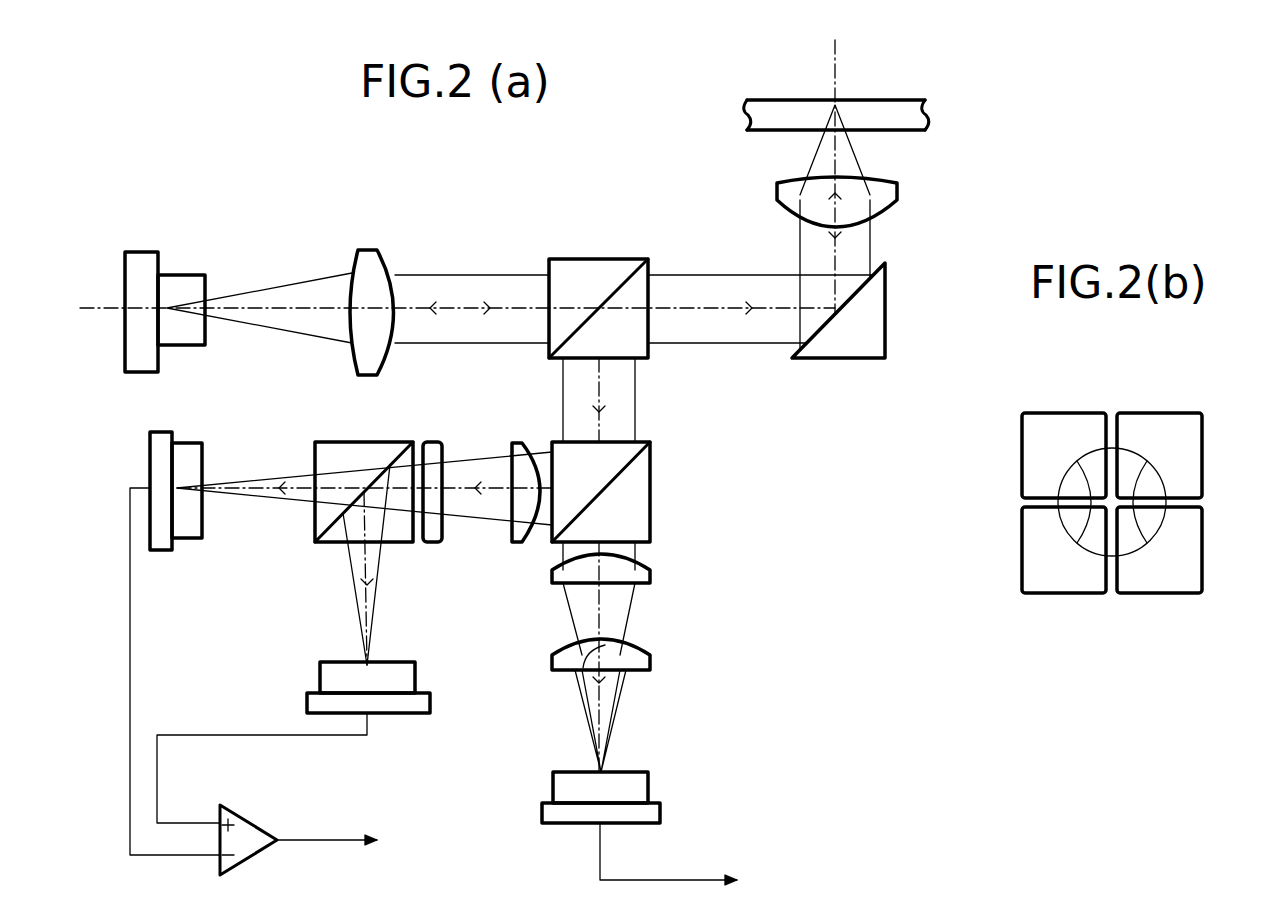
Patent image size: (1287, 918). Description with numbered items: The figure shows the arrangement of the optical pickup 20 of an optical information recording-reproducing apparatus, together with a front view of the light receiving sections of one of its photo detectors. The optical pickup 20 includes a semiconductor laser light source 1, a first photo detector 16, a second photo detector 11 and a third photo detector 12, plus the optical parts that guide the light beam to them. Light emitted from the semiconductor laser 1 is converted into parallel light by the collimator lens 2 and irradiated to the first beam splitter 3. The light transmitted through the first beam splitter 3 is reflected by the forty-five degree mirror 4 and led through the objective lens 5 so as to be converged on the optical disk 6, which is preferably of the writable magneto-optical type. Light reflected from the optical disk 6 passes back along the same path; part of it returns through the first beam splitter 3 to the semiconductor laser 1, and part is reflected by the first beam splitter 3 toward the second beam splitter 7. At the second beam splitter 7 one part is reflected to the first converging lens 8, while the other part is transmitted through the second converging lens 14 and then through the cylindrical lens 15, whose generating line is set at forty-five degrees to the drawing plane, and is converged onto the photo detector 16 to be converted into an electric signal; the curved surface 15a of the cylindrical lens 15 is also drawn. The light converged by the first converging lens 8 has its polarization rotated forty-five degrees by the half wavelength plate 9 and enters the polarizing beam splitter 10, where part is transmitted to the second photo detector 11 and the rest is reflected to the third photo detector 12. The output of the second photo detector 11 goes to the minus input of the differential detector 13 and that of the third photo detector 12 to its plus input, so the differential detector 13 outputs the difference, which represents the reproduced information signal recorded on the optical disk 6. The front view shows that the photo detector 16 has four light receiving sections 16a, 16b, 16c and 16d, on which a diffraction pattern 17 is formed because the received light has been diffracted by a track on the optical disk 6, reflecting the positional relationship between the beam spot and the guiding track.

In FIG. 2A, the semiconductor laser light source 1 is at (183, 292).
In FIG. 2A, the collimator lens 2 is at (375, 254).
In FIG. 2A, the first beam splitter 3 is at (648, 356).
In FIG. 2A, the 45 degrees mirror 4 is at (887, 308).
In FIG. 2A, the objective lens 5 is at (897, 193).
In FIG. 2A, the optical disk 6 is at (928, 114).
In FIG. 2A, the second beam splitter 7 is at (650, 492).
In FIG. 2A, the first converging lens 8 is at (518, 443).
In FIG. 2A, the ½ wavelength plate 9 is at (434, 443).
In FIG. 2A, the polarizing beam splitter 10 is at (367, 443).
In FIG. 2A, the second photo detector 11 is at (187, 443).
In FIG. 2A, the third photo detector 12 is at (415, 672).
In FIG. 2A, the differential detector 13 is at (250, 858).
In FIG. 2A, the second converging lens 14 is at (652, 578).
In FIG. 2A, the cylindrical lens 15 is at (652, 660).
In FIG. 2A, the cylindrical surface 15a is at (640, 664).
In FIG. 2A, the photo detector 16 is at (650, 792).
In FIG. 2B, the photo detector 16 is at (1222, 393).
In FIG. 2B, the light receiving section 16a is at (1060, 413).
In FIG. 2B, the light receiving section 16b is at (1155, 413).
In FIG. 2B, the light receiving section 16c is at (1058, 593).
In FIG. 2B, the light receiving section 16d is at (1160, 593).
In FIG. 2B, the diffraction pattern 17 is at (1140, 449).
In FIG. 2A, the optical pickup 20 is at (232, 178).